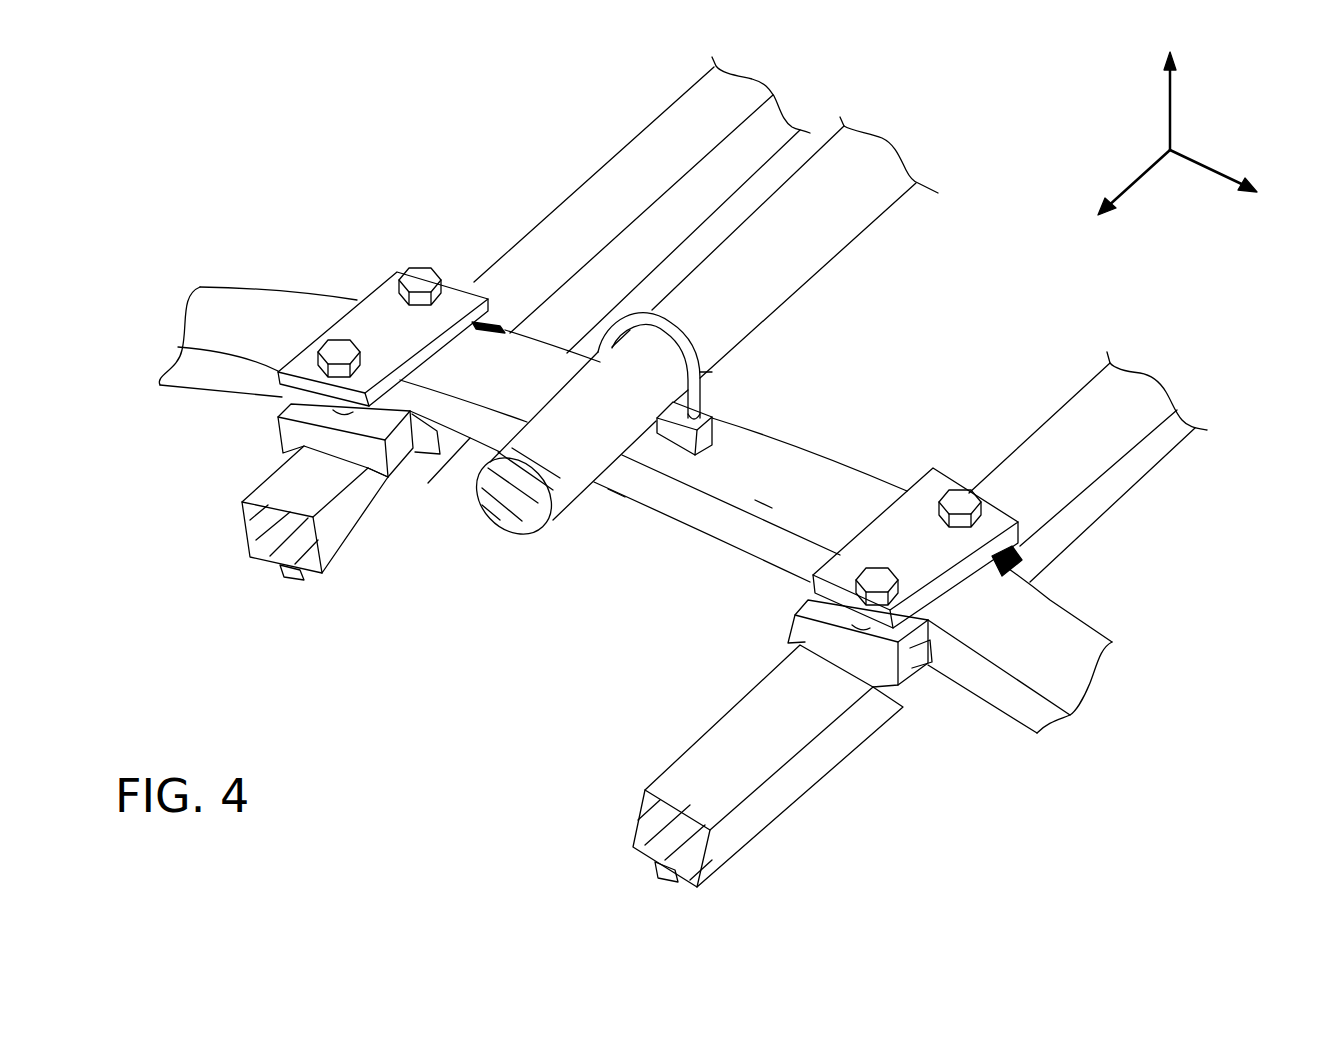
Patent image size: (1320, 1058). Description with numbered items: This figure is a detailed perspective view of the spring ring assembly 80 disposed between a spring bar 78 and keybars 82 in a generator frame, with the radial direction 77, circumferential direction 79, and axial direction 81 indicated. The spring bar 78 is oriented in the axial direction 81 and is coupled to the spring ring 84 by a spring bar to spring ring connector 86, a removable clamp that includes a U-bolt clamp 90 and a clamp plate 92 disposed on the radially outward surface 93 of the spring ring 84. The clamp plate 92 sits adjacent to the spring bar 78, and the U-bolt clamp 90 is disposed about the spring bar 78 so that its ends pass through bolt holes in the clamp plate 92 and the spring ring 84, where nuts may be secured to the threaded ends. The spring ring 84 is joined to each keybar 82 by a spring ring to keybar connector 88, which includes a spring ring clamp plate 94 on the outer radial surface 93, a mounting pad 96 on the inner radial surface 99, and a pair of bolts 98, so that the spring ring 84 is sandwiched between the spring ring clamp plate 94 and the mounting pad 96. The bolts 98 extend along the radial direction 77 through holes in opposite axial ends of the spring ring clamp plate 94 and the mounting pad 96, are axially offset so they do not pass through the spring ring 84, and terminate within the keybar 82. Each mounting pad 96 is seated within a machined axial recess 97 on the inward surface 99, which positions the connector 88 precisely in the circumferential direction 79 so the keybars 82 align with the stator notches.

The radial direction 77 is at (1172, 110).
The circumferential direction 79 is at (1207, 165).
The axial direction 81 is at (1140, 175).
The spring bar 78 is at (802, 262).
The spring ring assembly 80 is at (450, 637).
The keybar 82 is at (338, 530).
The spring ring 84 is at (683, 500).
The spring bar to spring ring connector 86 is at (722, 372).
The spring ring to keybar connector 88 is at (343, 378).
The U-bolt clamp 90 is at (682, 352).
The clamp plate 92 is at (707, 433).
The radially outward surface 93 is at (762, 505).
The spring ring clamp plate 94 is at (382, 288).
The mounting pad 96 is at (292, 435).
The machined axial recess 97 is at (400, 437).
The bolt 98 is at (418, 270).
The inner radial surface 99 is at (615, 492).